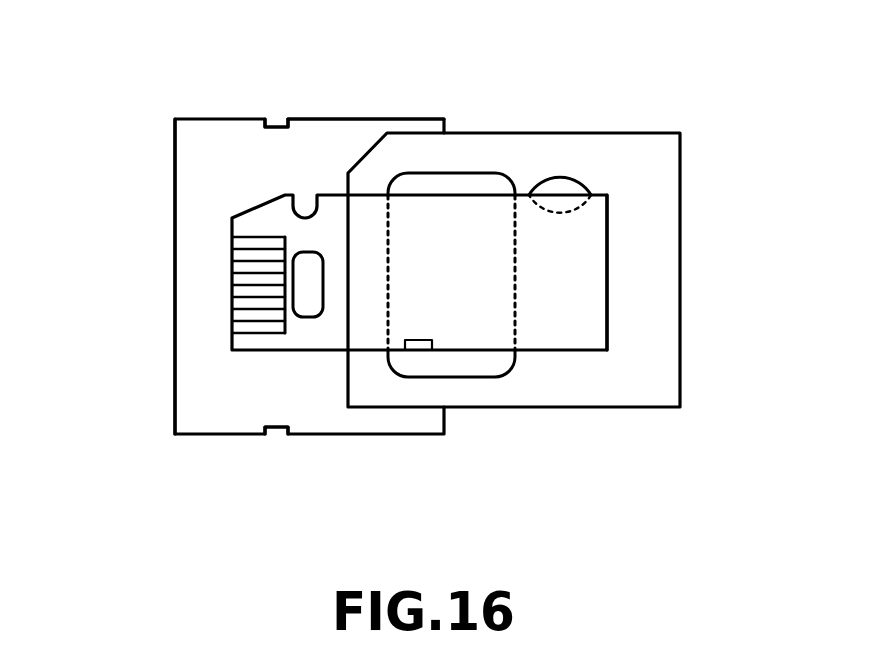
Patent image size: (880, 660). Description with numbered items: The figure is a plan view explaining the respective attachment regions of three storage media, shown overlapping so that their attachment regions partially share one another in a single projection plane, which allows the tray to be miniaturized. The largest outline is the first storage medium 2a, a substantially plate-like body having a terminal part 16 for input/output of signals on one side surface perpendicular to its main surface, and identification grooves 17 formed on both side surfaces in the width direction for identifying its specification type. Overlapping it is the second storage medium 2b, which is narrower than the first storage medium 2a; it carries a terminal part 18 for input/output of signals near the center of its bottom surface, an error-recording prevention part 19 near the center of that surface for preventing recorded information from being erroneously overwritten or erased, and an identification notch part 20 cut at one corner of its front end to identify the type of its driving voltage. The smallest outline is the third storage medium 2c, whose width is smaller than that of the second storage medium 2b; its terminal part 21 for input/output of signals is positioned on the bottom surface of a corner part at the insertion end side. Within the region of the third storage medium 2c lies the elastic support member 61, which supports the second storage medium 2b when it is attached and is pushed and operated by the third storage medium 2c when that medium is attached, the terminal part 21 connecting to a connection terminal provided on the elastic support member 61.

The first storage medium 2a is at (193, 402).
The second storage medium 2b is at (663, 328).
The third storage medium 2c is at (230, 345).
The terminal part 16 is at (193, 233).
The identification grooves 17 is at (277, 118).
The terminal part 18 is at (467, 182).
The error-recording prevention part 19 is at (560, 208).
The identification notch part 20 is at (372, 118).
The terminal part 21 is at (257, 290).
The elastic support member 61 is at (590, 263).